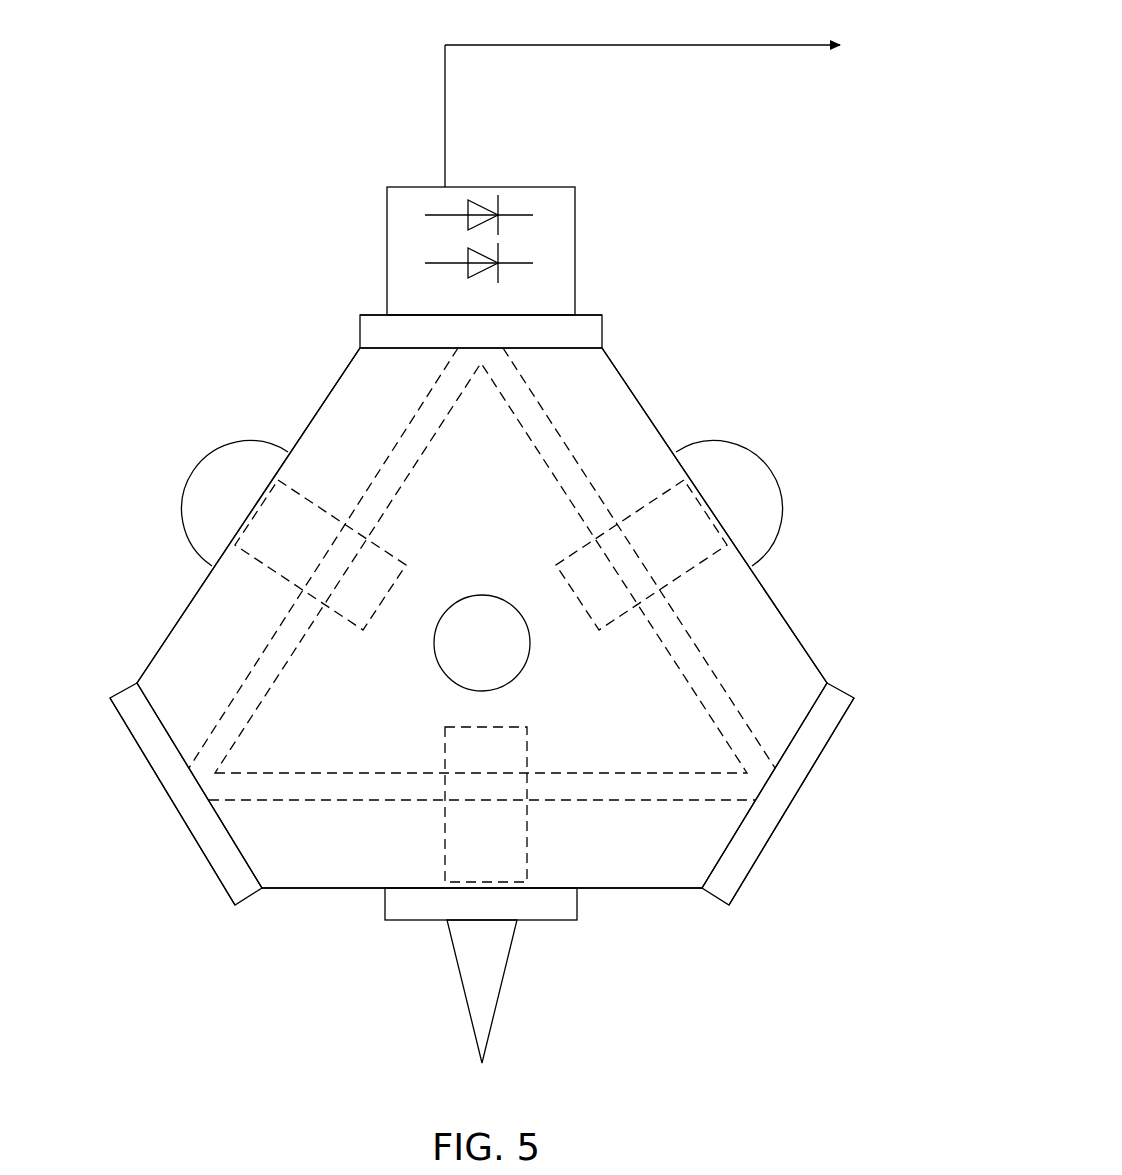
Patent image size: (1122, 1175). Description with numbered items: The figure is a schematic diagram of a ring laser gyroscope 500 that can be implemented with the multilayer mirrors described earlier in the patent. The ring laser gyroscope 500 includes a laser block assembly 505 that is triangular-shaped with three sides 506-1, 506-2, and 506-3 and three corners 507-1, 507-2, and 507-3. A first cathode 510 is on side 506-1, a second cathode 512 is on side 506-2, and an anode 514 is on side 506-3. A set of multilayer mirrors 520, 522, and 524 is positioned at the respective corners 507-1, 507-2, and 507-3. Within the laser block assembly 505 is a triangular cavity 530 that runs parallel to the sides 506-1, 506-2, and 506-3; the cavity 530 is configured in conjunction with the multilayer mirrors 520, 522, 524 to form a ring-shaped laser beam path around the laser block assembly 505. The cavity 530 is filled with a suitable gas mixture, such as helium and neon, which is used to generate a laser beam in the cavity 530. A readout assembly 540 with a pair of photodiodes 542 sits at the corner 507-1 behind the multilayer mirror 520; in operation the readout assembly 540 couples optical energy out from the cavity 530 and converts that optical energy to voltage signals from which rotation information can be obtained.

The ring laser gyroscope 500 is at (158, 339).
The laser block assembly 505 is at (648, 753).
The side 506-1 is at (313, 388).
The side 506-2 is at (667, 392).
The side 506-3 is at (681, 905).
The corner 507-1 is at (370, 311).
The corner 507-2 is at (145, 768).
The corner 507-3 is at (847, 720).
The first cathode 510 is at (183, 480).
The second cathode 512 is at (780, 475).
The anode 514 is at (460, 995).
The multilayer mirror 520 is at (603, 330).
The multilayer mirror 522 is at (207, 860).
The multilayer mirror 524 is at (785, 808).
The triangular cavity 530 is at (260, 670).
The readout assembly 540 is at (575, 252).
The photodiodes 542 is at (427, 199).